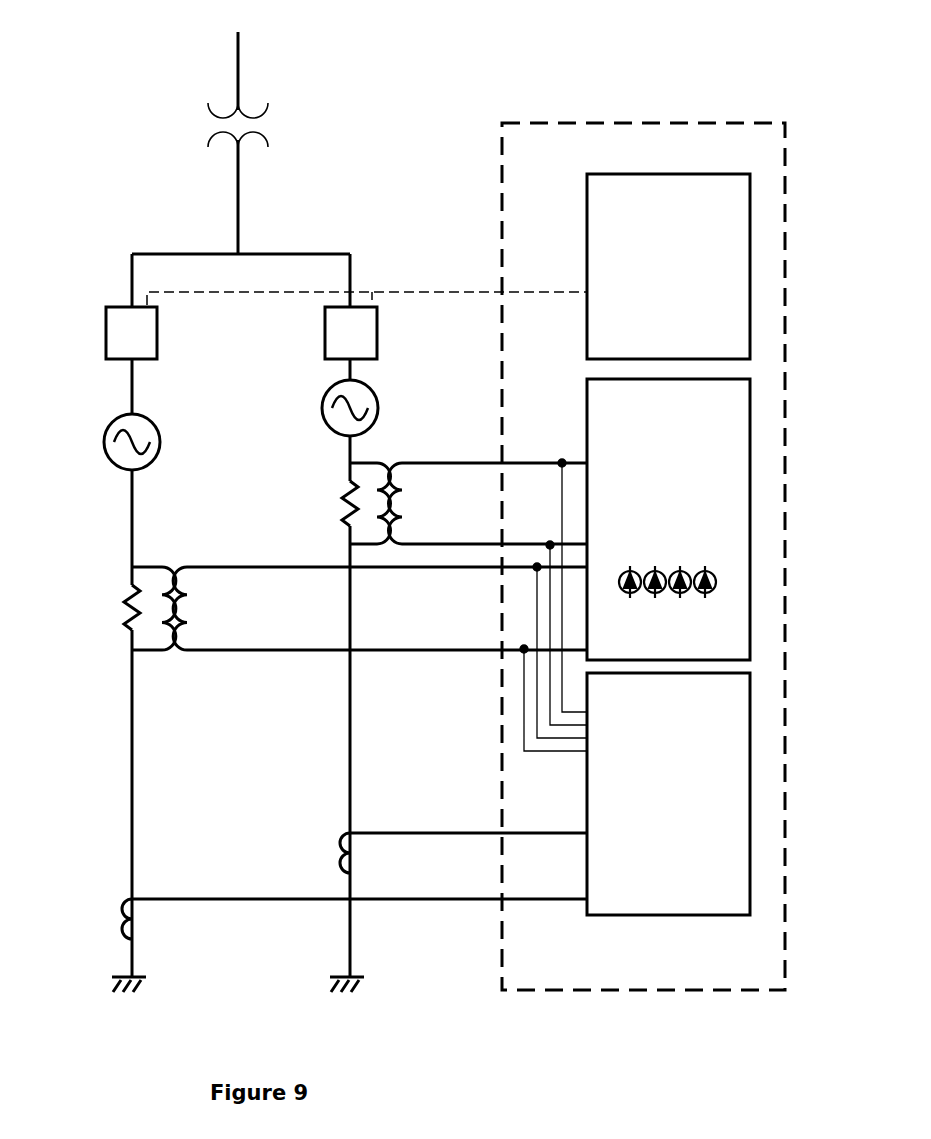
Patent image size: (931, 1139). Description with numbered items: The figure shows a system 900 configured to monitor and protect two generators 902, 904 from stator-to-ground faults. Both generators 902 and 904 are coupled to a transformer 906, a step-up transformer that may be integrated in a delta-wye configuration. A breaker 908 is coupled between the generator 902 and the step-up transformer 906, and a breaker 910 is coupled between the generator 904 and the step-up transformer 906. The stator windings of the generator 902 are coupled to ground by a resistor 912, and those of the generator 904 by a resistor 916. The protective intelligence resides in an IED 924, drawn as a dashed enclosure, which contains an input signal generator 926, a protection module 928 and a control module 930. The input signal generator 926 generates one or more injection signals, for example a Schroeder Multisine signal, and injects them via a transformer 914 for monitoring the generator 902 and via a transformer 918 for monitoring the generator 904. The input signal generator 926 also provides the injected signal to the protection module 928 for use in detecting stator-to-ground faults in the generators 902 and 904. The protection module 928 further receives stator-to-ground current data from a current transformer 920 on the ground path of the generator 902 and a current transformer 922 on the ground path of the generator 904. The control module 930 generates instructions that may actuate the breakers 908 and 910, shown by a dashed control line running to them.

The system 900 is at (744, 63).
The generator 902 is at (160, 438).
The generator 904 is at (378, 400).
The transformer 906 is at (268, 131).
The breaker 908 is at (157, 340).
The breaker 910 is at (377, 340).
The resistor 912 is at (127, 600).
The transformer 914 is at (190, 597).
The resistor 916 is at (343, 497).
The transformer 918 is at (415, 497).
The current transformer 920 is at (123, 920).
The current transformer 922 is at (343, 842).
The IED 924 is at (641, 121).
The input signal generator 926 is at (650, 555).
The protection module 928 is at (650, 830).
The control module 930 is at (650, 304).